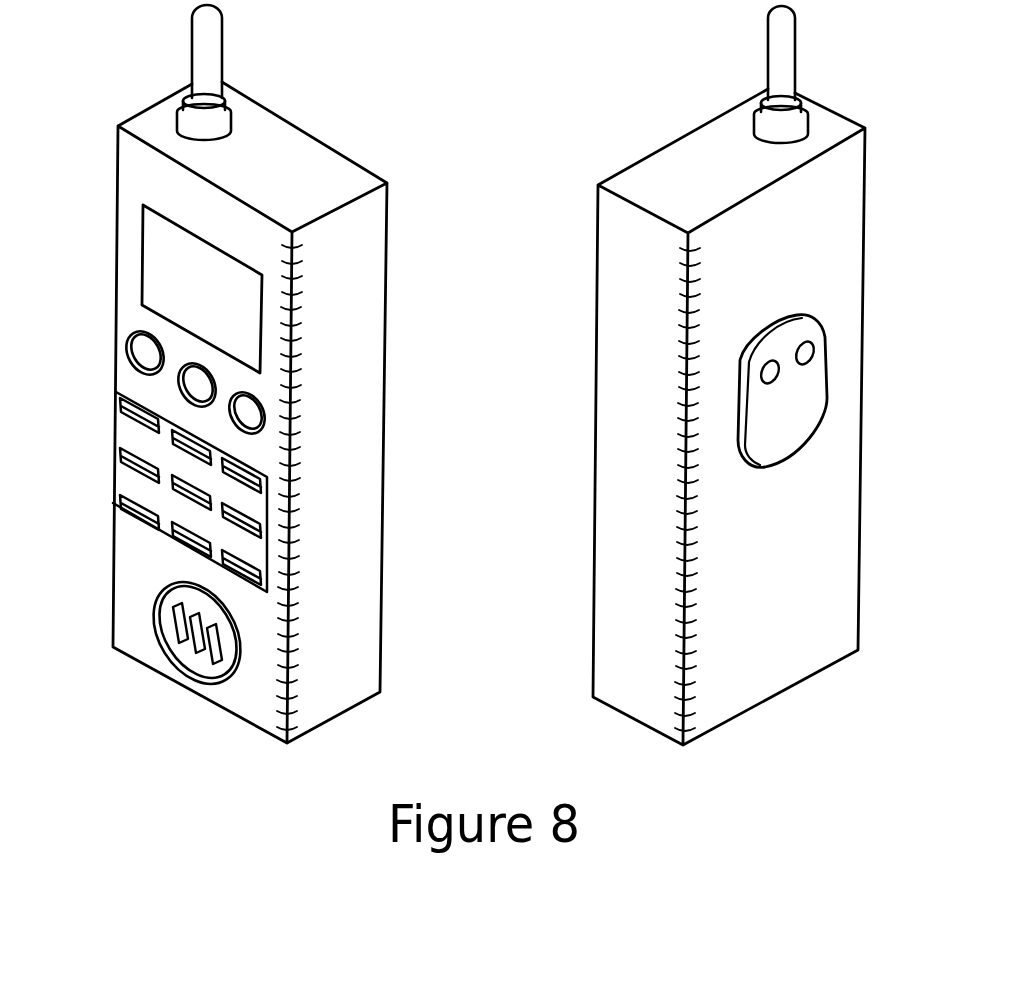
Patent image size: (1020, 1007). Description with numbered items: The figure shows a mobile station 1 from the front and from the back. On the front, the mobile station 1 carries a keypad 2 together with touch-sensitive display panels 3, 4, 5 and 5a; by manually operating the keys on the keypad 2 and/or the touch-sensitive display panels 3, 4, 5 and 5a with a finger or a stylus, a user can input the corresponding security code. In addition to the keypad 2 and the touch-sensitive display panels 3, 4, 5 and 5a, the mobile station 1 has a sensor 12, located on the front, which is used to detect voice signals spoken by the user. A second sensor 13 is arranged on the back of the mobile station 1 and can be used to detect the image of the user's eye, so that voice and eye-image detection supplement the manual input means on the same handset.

The mobile station 1 is at (272, 140).
The keypad 2 is at (123, 446).
The touch-sensitive display panel 3 is at (142, 350).
The touch-sensitive display panel 4 is at (195, 383).
The touch-sensitive display panel 5 is at (253, 414).
The touch-sensitive display panel 5a is at (163, 263).
The sensor 12 is at (167, 625).
The second sensor 13 is at (800, 391).